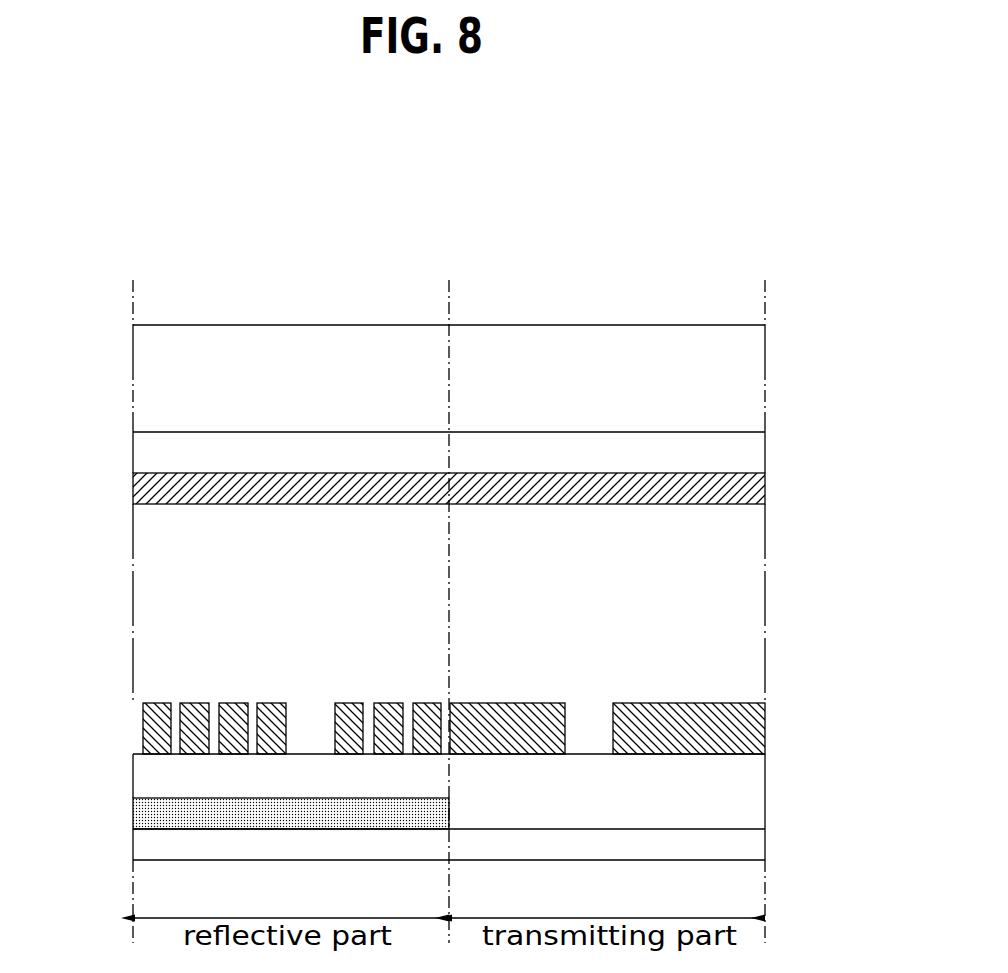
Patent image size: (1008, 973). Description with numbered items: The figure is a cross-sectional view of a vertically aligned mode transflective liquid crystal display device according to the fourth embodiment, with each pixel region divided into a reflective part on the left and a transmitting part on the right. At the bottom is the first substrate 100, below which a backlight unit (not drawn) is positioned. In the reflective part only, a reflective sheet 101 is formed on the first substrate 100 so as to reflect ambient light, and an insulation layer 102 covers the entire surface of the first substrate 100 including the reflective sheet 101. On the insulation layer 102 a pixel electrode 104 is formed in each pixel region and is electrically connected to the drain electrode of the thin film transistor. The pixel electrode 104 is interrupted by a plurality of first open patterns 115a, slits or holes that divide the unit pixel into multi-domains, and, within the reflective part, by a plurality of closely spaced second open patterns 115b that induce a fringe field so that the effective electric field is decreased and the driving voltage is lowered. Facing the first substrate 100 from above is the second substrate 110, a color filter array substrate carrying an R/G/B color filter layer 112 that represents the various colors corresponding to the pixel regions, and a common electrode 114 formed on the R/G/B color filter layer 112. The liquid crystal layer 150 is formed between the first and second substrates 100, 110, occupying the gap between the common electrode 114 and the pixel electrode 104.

The first substrate 100 is at (755, 845).
The reflective sheet 101 is at (143, 815).
The insulation layer 102 is at (755, 791).
The pixel electrode 104 is at (755, 728).
The second substrate 110 is at (755, 372).
The R/G/B color filter layer 112 is at (755, 450).
The common electrode 114 is at (755, 488).
The first open patterns 115a is at (309, 705).
The second open patterns 115b is at (250, 704).
The liquid crystal layer 150 is at (755, 593).